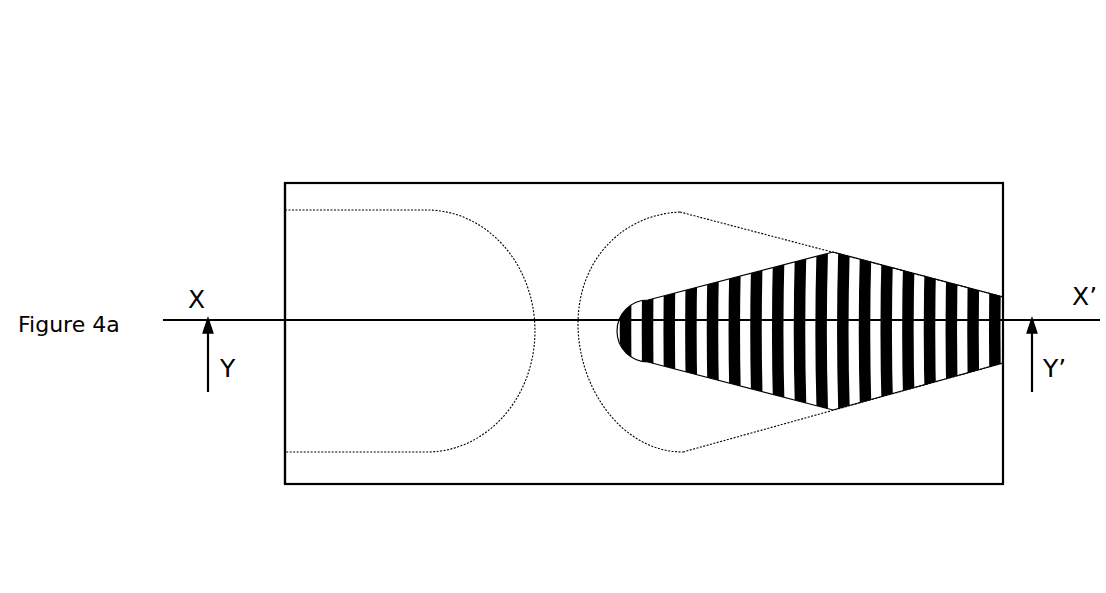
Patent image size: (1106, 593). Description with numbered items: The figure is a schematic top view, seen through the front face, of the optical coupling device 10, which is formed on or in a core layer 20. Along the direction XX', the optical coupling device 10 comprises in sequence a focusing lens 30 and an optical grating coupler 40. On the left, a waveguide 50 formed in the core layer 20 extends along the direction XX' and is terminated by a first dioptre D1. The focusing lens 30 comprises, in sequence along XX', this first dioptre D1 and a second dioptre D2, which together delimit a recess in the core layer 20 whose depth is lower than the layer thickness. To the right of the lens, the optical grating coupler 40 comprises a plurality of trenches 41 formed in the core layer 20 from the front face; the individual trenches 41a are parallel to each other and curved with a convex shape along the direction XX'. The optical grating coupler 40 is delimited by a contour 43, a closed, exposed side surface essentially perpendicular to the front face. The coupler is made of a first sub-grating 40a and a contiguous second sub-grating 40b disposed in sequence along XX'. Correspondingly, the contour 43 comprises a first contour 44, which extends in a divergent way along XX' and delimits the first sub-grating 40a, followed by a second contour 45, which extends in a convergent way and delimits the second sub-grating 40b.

The optical coupling device 10 is at (305, 107).
The core layer 20 is at (284, 183).
The focusing lens 30 is at (562, 223).
The optical grating coupler 40 is at (888, 263).
The first sub-grating 40a is at (770, 313).
The second sub-grating 40b is at (918, 313).
The plurality of trenches 41 is at (868, 592).
The trenches 41a is at (980, 592).
The contour 43 is at (983, 290).
The first contour 44 is at (700, 280).
The second contour 45 is at (943, 382).
The waveguide 50 is at (317, 295).
The first dioptre D1 is at (490, 410).
The second dioptre D2 is at (595, 403).